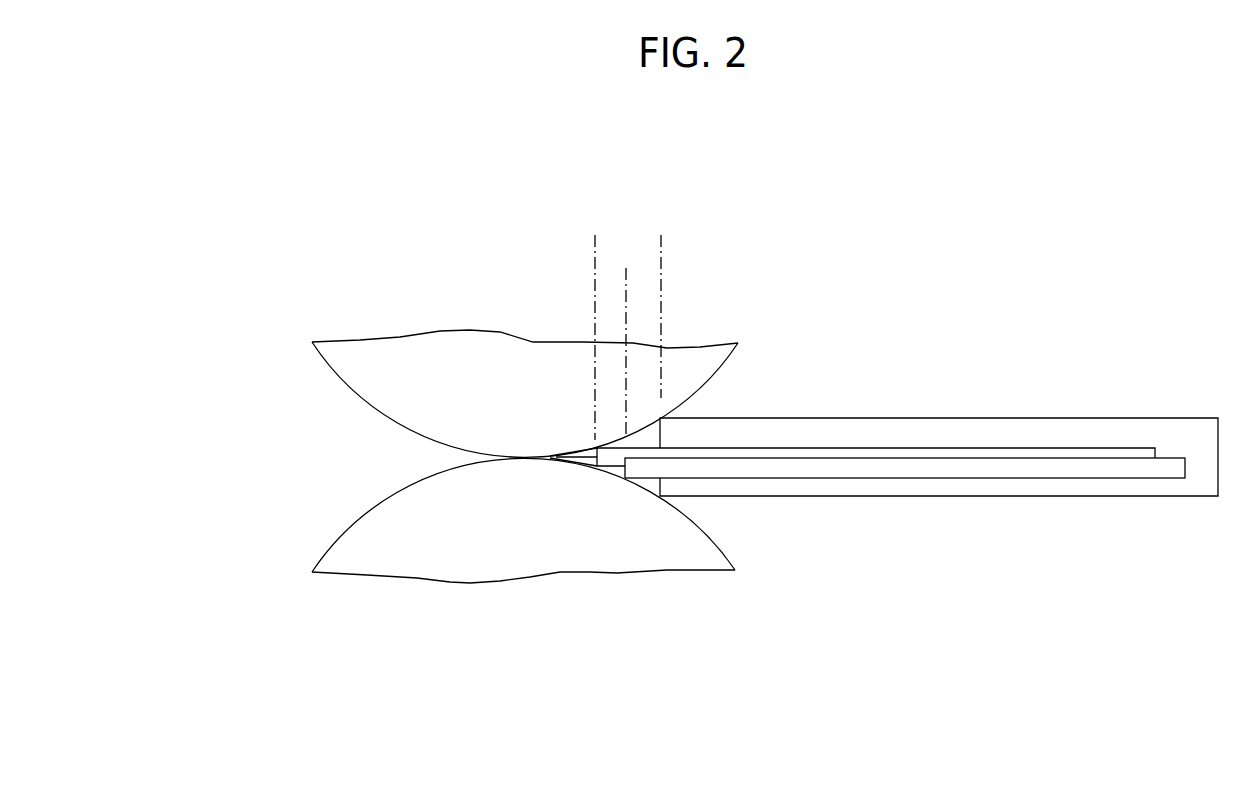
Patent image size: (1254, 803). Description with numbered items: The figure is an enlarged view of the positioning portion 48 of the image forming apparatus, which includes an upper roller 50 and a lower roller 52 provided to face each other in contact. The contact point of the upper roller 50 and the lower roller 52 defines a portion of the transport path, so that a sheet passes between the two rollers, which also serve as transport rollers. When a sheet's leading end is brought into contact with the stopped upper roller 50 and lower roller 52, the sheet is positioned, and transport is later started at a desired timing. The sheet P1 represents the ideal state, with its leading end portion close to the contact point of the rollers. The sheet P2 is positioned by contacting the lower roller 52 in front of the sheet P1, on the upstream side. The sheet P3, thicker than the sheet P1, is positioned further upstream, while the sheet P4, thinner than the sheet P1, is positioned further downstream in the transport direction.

The positioning portion 48 is at (460, 464).
The upper roller 50 is at (360, 355).
The lower roller 52 is at (360, 557).
The sheet P1 is at (822, 446).
The sheet P2 is at (927, 470).
The sheet P3 is at (997, 417).
The sheet P4 is at (582, 465).